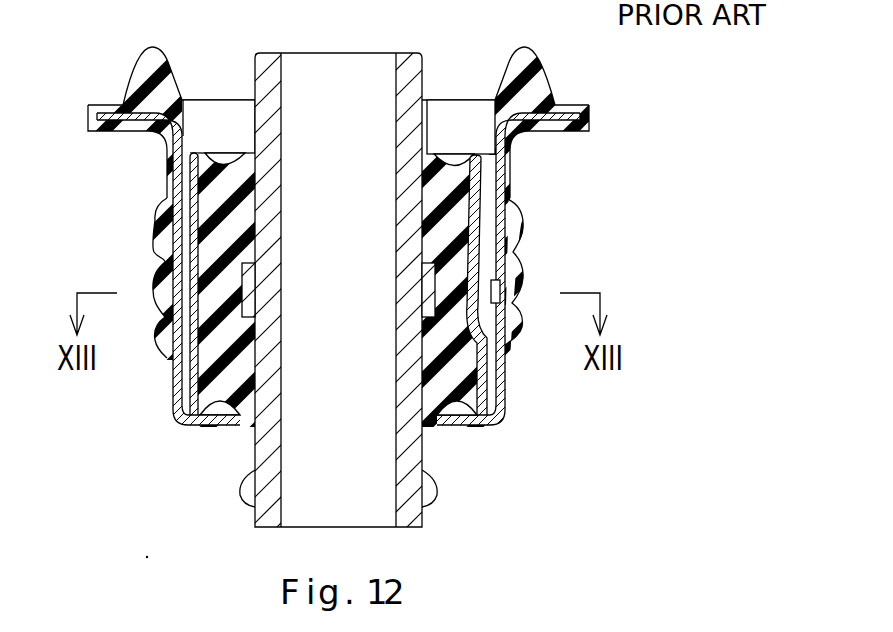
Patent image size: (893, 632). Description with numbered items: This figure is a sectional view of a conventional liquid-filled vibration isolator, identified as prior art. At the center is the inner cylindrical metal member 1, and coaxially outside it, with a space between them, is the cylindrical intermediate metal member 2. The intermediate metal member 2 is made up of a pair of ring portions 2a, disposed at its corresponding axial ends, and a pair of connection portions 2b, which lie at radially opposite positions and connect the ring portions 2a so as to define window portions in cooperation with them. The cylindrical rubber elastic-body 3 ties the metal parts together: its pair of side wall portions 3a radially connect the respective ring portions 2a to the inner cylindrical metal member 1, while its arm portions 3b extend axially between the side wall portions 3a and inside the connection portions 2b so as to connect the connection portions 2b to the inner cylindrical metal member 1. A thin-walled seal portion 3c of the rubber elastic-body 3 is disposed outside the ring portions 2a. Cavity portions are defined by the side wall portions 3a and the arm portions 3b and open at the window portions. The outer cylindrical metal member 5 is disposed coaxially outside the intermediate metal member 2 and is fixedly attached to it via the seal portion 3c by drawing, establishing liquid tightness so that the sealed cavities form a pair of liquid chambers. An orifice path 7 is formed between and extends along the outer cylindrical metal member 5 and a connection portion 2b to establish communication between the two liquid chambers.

The inner cylindrical metal member 1 is at (401, 54).
The intermediate metal member 2 is at (201, 141).
The ring portions 2a is at (190, 162).
The connection portions 2b is at (190, 215).
The cylindrical rubber elastic-body 3 is at (243, 141).
The side wall portions 3a is at (460, 176).
The arm portions 3b is at (458, 366).
The thin-walled seal portion 3c is at (506, 203).
The outer cylindrical metal member 5 is at (505, 176).
The orifice path 7 is at (496, 300).